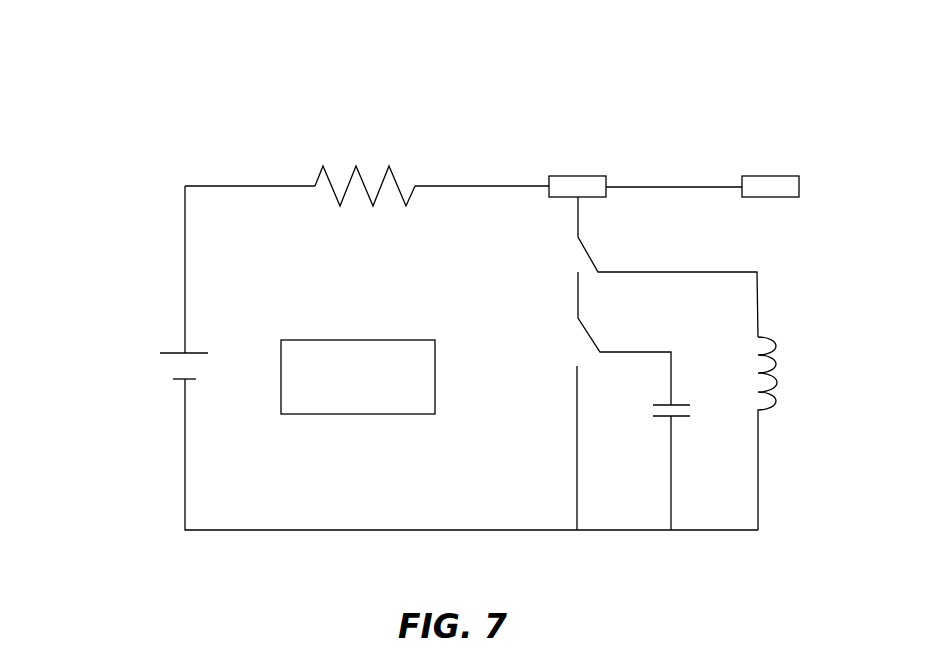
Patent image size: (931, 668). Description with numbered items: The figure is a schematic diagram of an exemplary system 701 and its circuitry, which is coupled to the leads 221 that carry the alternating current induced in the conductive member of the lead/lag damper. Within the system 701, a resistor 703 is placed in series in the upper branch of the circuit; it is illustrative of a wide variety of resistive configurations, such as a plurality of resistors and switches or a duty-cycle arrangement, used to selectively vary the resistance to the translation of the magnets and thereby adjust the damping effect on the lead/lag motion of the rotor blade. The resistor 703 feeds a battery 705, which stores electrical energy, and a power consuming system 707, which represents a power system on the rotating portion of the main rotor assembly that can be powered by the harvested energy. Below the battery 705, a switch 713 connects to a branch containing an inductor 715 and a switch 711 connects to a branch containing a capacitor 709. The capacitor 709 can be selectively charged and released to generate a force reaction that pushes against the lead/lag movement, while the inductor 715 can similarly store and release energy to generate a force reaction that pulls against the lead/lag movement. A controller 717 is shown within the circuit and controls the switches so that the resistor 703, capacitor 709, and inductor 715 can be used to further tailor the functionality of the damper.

The system 701 is at (171, 108).
The resistor 703 is at (356, 152).
The battery 705 is at (578, 176).
The power consuming system 707 is at (768, 176).
The capacitor 709 is at (651, 440).
The switch 711 is at (553, 341).
The switch 713 is at (603, 244).
The inductor 715 is at (791, 413).
The controller 717 is at (358, 377).
The leads 221 is at (148, 383).